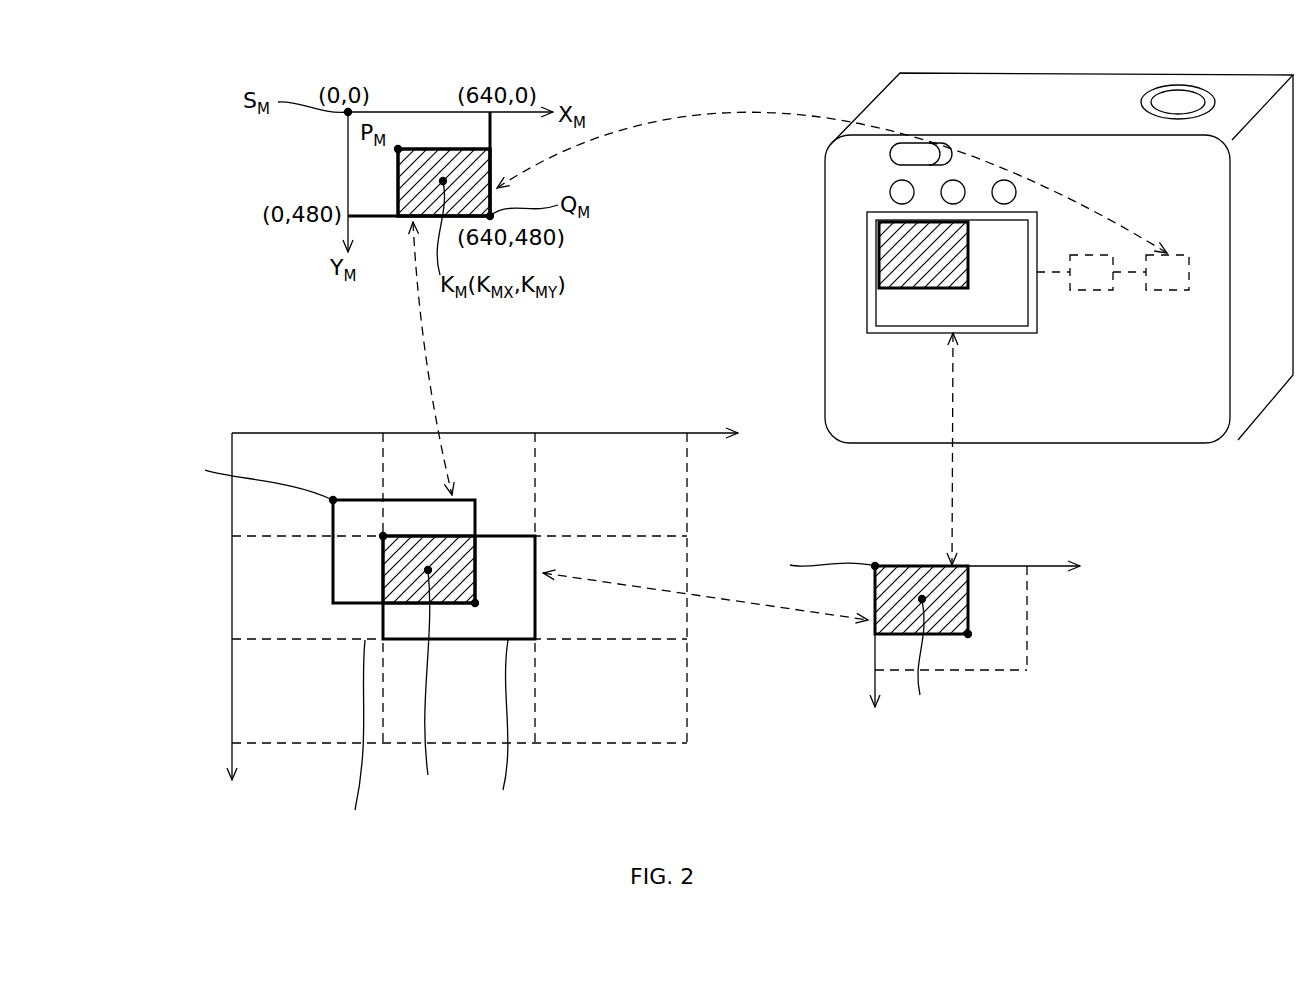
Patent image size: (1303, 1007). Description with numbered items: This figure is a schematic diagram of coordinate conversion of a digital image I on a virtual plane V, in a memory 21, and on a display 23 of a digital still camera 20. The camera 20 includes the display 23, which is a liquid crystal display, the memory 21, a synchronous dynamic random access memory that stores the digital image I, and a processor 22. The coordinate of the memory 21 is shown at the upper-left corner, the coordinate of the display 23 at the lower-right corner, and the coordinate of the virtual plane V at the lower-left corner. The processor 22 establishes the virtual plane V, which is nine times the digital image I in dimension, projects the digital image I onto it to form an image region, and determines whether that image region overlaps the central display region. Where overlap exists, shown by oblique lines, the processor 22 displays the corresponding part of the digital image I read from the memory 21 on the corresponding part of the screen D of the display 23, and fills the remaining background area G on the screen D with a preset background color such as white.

The digital still camera (DSC) 20 is at (1205, 430).
The memory 21 is at (1168, 292).
The processor 22 is at (1092, 292).
The display 23 is at (952, 368).
The screen D is at (1027, 645).
The background area G is at (1013, 335).
The digital image I is at (490, 132).
The virtual plane V is at (607, 745).